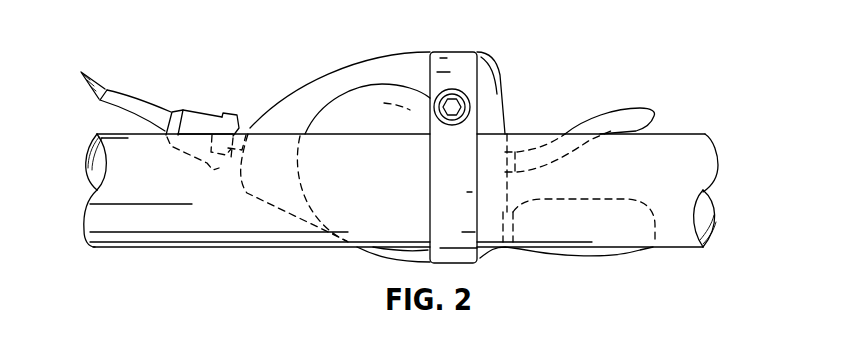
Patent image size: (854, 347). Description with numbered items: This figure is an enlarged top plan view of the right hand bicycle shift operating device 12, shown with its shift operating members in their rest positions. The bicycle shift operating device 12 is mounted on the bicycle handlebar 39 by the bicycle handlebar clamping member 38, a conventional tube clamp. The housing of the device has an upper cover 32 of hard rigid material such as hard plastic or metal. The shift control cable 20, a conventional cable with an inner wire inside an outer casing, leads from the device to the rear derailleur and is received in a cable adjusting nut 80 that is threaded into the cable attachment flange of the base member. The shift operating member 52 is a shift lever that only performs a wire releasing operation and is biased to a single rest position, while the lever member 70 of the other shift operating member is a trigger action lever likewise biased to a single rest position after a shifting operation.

The bicycle shift operating device 12 is at (521, 34).
The shift control cable 20 is at (139, 105).
The upper cover 32 is at (313, 93).
The bicycle handlebar clamping member 38 is at (480, 122).
The bicycle handlebar 39 is at (681, 159).
The shift operating member 52 is at (601, 114).
The lever member 70 is at (598, 255).
The cable adjusting nut 80 is at (195, 110).